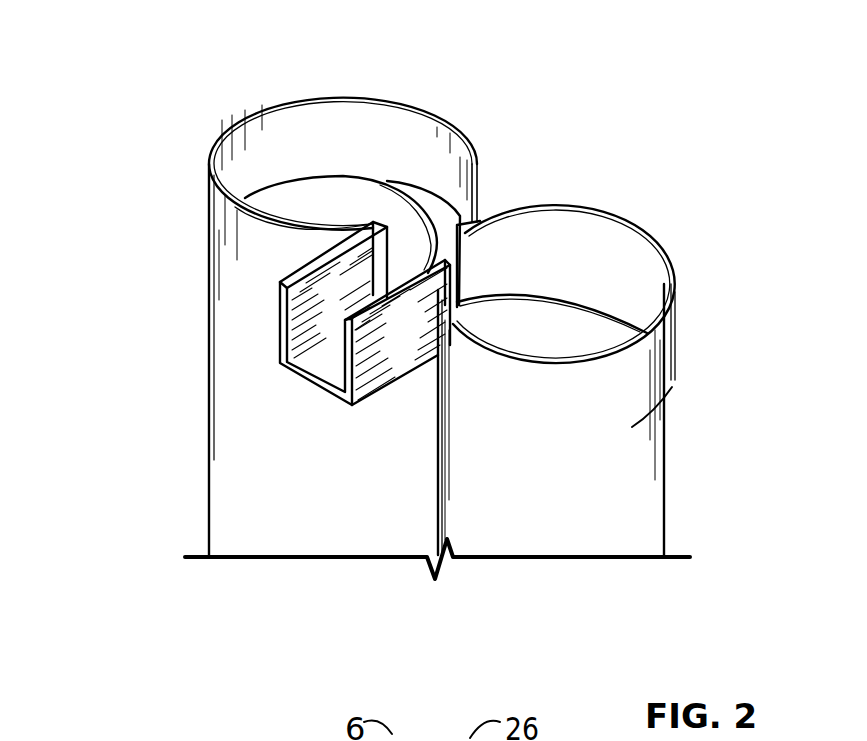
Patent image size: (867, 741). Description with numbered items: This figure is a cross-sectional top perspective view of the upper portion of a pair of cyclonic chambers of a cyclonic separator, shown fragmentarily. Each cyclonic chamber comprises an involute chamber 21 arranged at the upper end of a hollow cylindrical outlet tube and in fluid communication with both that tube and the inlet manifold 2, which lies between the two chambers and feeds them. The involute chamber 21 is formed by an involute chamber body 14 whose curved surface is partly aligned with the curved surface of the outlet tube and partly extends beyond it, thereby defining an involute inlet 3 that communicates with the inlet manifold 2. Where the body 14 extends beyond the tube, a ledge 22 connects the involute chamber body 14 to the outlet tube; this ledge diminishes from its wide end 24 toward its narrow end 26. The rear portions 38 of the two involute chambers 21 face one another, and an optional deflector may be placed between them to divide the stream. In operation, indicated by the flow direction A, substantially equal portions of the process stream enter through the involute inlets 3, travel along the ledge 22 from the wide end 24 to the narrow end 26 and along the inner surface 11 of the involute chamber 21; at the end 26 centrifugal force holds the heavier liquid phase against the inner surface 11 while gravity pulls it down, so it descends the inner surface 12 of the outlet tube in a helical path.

The inlet manifold 2 is at (300, 380).
The involute inlet 3 is at (410, 230).
The inner surface of the involute chamber 11 is at (268, 137).
The inner surface of the cylindrical outlet tube 12 is at (290, 217).
The involute chamber body 14 is at (210, 168).
The involute chamber 21 is at (412, 107).
The ledge 22 is at (570, 297).
The wide end of ledge 24 is at (500, 297).
The narrow end of ledge 26 is at (300, 177).
The rear portion of involute chamber 38 is at (493, 168).
The flow direction A is at (353, 285).